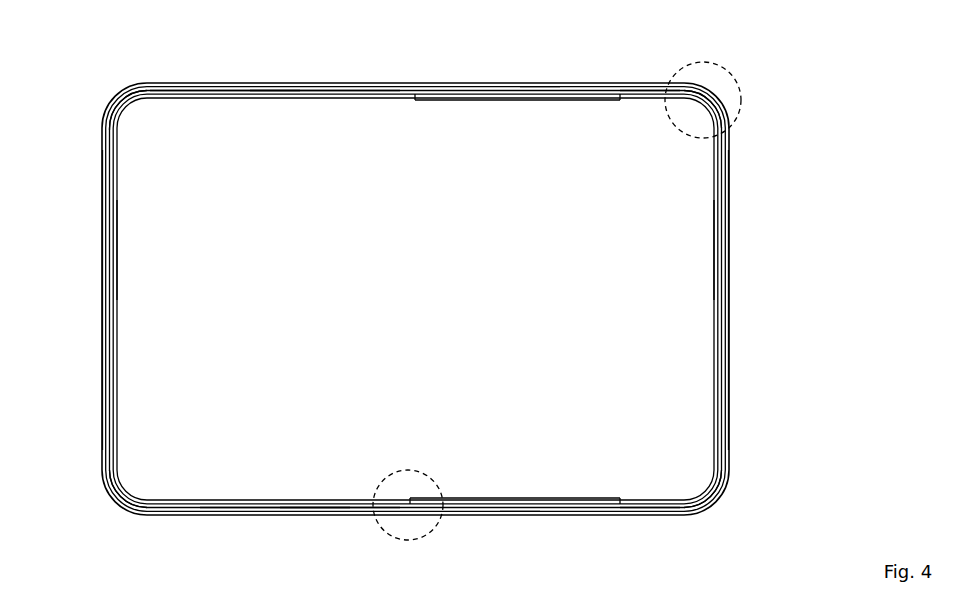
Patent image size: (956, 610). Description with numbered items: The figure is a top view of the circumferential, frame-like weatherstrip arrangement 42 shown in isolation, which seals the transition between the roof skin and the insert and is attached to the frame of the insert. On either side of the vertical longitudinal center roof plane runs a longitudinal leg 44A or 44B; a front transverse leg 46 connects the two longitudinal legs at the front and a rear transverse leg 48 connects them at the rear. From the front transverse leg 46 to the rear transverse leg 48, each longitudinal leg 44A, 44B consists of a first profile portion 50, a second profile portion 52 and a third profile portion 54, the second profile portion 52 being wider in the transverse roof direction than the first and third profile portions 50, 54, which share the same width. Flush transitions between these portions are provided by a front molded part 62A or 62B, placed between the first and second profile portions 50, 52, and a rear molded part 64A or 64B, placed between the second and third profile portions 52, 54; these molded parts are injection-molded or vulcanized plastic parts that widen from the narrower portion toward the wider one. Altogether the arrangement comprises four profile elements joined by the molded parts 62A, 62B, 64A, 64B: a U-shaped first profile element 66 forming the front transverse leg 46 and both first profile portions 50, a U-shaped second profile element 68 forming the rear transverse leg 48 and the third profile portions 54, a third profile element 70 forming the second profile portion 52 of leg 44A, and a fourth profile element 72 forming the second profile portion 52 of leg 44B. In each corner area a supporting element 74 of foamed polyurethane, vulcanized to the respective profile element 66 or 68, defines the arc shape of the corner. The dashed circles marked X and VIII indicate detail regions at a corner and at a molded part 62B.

The weatherstrip arrangement 42 is at (415, 263).
The longitudinal leg 44A is at (207, 83).
The longitudinal leg 44B is at (313, 515).
The front transverse leg 46 is at (101, 338).
The rear transverse leg 48 is at (730, 380).
The first profile portion 50 is at (262, 83).
The second profile portion 52 is at (493, 83).
The third profile portion 54 is at (672, 84).
The front molded part 62A is at (410, 83).
The front molded part 62B is at (408, 508).
The rear molded part 64A is at (622, 88).
The rear molded part 64B is at (620, 514).
The first profile element 66 is at (101, 258).
The second profile element 68 is at (731, 260).
The third profile element 70 is at (520, 513).
The fourth profile element 72 is at (537, 83).
The supporting element 74 is at (120, 98).
The detail view X is at (741, 111).
The detail view VIII is at (420, 528).